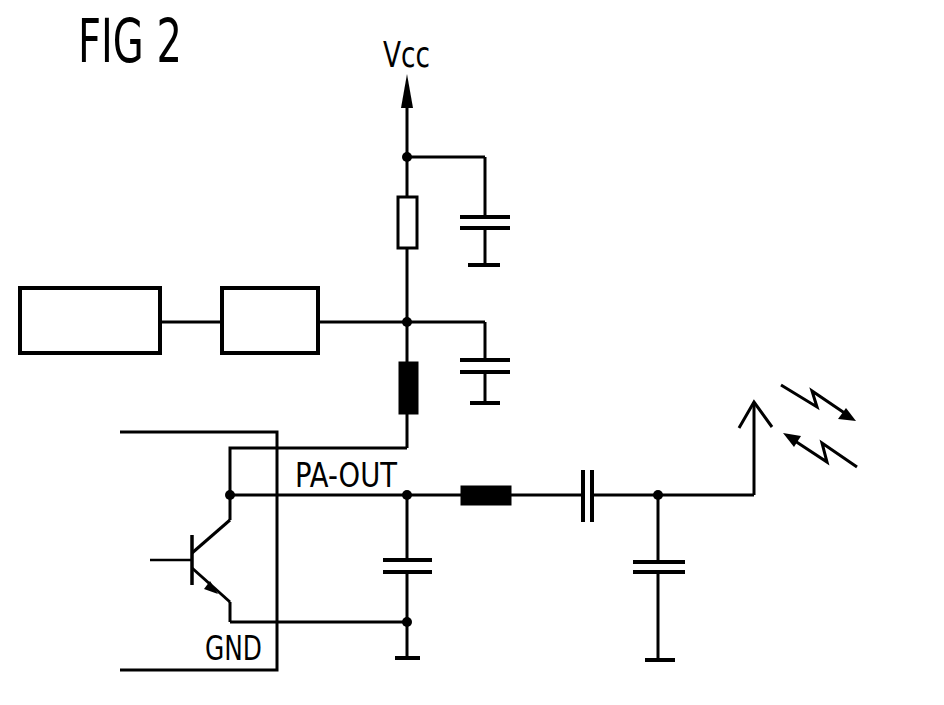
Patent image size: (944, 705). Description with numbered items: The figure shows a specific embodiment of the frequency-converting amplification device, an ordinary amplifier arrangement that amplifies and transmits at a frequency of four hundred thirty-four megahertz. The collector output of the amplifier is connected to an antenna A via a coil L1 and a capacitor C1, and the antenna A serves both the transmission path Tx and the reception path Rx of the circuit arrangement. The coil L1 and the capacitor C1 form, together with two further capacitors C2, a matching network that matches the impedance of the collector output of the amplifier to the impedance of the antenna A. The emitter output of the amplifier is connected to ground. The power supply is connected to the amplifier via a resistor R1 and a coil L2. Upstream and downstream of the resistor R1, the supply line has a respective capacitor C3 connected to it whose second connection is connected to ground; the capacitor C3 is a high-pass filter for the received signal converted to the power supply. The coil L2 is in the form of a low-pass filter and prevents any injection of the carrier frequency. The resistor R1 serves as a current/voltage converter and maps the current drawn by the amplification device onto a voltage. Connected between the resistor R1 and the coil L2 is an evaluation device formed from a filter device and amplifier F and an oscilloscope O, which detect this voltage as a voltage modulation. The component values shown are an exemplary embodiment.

The resistor R1 is at (398, 210).
The capacitor C3 is at (510, 222).
The coil L2 is at (400, 385).
The coil L1 is at (468, 487).
The capacitor C1 is at (588, 470).
The capacitor C2 is at (422, 578).
The antenna A is at (745, 414).
The oscilloscope O is at (90, 320).
The filter device and amplifier F is at (270, 320).
The transmission path Tx is at (836, 409).
The reception path Rx is at (840, 459).